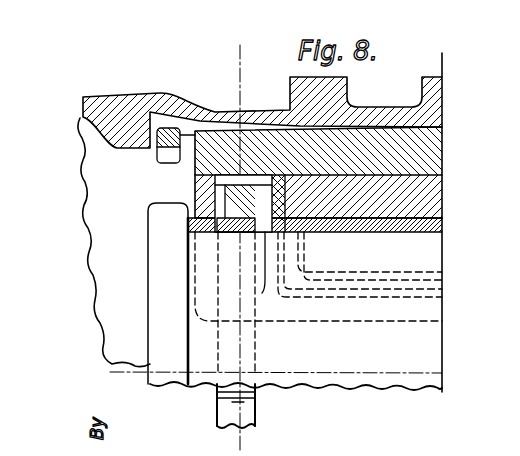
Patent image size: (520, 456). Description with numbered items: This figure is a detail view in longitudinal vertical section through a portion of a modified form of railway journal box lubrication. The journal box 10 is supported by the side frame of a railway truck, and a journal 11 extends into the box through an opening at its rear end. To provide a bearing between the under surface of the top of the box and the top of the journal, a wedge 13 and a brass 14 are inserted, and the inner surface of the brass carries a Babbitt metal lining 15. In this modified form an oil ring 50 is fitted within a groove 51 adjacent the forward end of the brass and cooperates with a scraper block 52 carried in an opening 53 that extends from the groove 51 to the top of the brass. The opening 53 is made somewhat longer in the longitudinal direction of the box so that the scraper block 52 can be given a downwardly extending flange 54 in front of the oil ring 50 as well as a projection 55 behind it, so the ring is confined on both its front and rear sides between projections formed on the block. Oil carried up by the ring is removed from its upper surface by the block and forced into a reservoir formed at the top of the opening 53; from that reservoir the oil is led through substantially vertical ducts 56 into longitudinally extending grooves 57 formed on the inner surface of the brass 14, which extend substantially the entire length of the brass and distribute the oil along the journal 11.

The journal box 10 is at (230, 80).
The journal 11 is at (440, 336).
The wedge 13 is at (427, 155).
The brass 14 is at (430, 200).
The Babbitt metal lining 15 is at (437, 225).
The oil ring 50 is at (247, 413).
The groove 51 is at (222, 306).
The scraper block 52 is at (227, 184).
The opening 53 is at (273, 180).
The downwardly extending flange 54 is at (188, 223).
The projection 55 is at (240, 323).
The vertical ducts 56 is at (306, 257).
The longitudinally extending grooves 57 is at (417, 252).